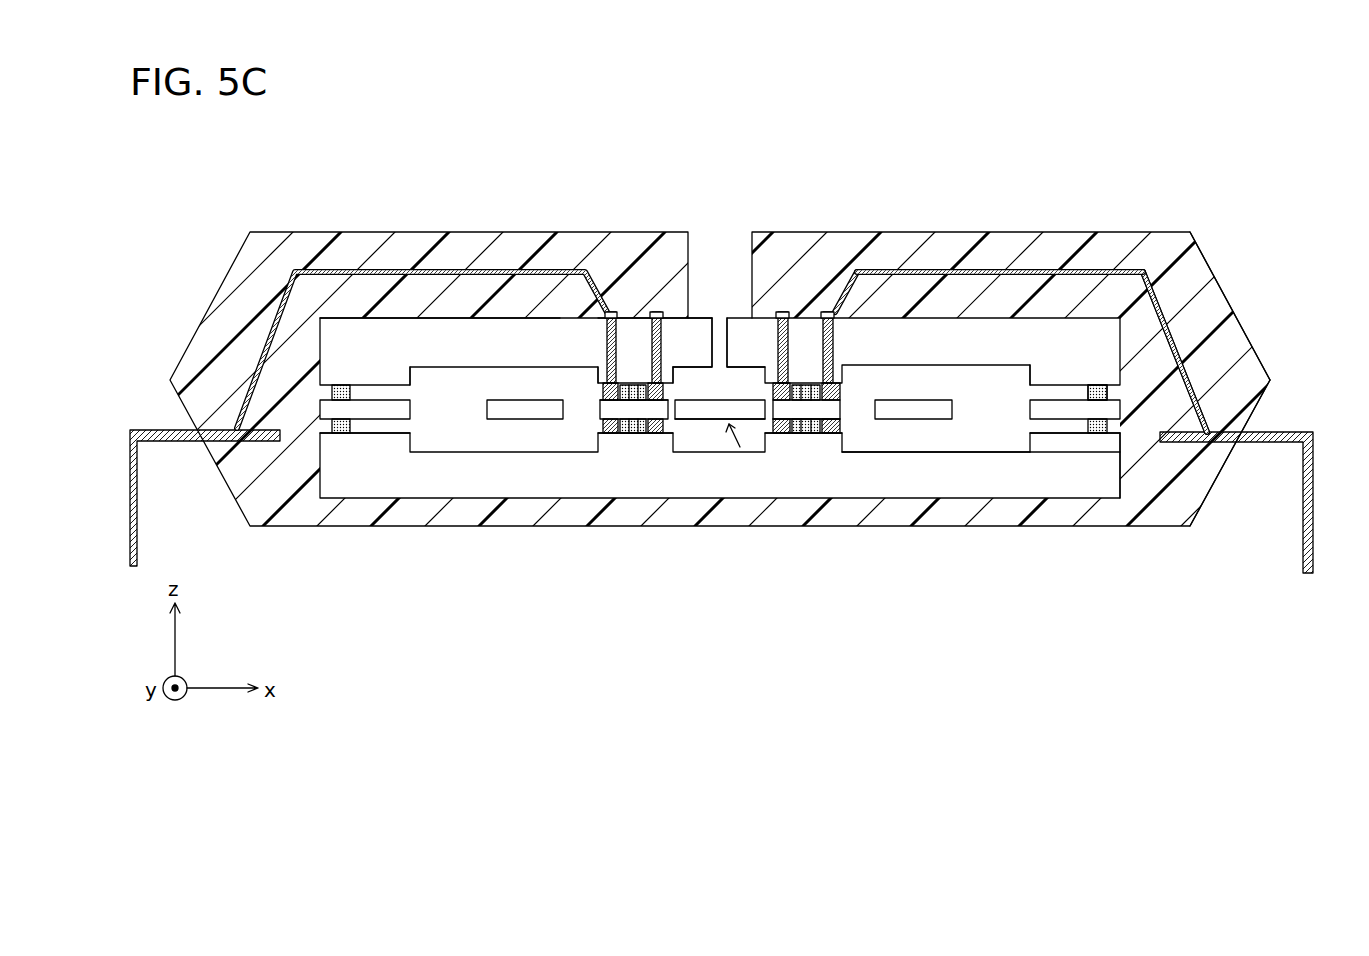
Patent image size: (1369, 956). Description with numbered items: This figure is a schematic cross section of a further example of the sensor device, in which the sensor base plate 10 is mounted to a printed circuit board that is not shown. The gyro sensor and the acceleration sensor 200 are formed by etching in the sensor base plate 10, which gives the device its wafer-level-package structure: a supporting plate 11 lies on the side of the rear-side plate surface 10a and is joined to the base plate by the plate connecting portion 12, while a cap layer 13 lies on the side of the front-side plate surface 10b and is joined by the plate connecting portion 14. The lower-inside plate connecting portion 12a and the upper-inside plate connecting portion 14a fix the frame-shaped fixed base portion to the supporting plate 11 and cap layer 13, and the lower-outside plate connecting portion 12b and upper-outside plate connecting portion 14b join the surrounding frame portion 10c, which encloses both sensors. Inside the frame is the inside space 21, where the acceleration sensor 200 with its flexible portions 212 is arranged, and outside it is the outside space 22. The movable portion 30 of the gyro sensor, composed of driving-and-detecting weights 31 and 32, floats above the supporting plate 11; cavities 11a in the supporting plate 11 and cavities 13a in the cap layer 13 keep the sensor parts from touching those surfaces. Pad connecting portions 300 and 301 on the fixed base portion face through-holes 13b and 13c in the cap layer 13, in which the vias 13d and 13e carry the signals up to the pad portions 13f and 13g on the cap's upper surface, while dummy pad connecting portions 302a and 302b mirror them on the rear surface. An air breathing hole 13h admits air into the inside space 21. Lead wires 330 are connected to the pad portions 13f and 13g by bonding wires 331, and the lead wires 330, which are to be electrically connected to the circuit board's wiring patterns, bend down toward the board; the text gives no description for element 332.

The sensor base plate 10 is at (1207, 307).
The rear-side plate surface 10a is at (1118, 428).
The front-side plate surface 10b is at (1128, 270).
The surrounding frame portion 10c is at (1140, 400).
The supporting plate 11 is at (1060, 505).
The cavities 11a is at (975, 470).
The plate connecting portion 12 is at (1125, 480).
The lower-inside plate connecting portion 12a is at (625, 435).
The lower-outside plate connecting portion 12b is at (350, 435).
The cap layer 13 is at (1040, 335).
The cavities 13a is at (1008, 330).
The through-hole 13b is at (572, 320).
The through-hole 13c is at (700, 322).
The via 13d is at (621, 322).
The via 13e is at (690, 322).
The pad portion 13f is at (607, 312).
The pad portion 13g is at (655, 312).
The air breathing hole 13h is at (745, 330).
The plate connecting portion 14 is at (1090, 383).
The upper-inside plate connecting portion 14a is at (806, 388).
The upper-outside plate connecting portion 14b is at (340, 385).
The inside space 21 is at (716, 425).
The outside space 22 is at (470, 455).
The acceleration sensor 200 is at (742, 450).
The flexible portions 212 is at (705, 425).
The movable portion 30 is at (975, 370).
The driving-and-detecting weight 31 is at (505, 400).
The driving-and-detecting weight 32 is at (900, 400).
The pad connecting portion 300 is at (603, 392).
The pad connecting portion 301 is at (720, 330).
The dummy pad connecting portion 302a is at (655, 425).
The dummy pad connecting portion 302b is at (606, 425).
The lead wire 330 is at (1268, 445).
The bonding wire 331 is at (1060, 272).
The lead bent portion 332 is at (1160, 268).